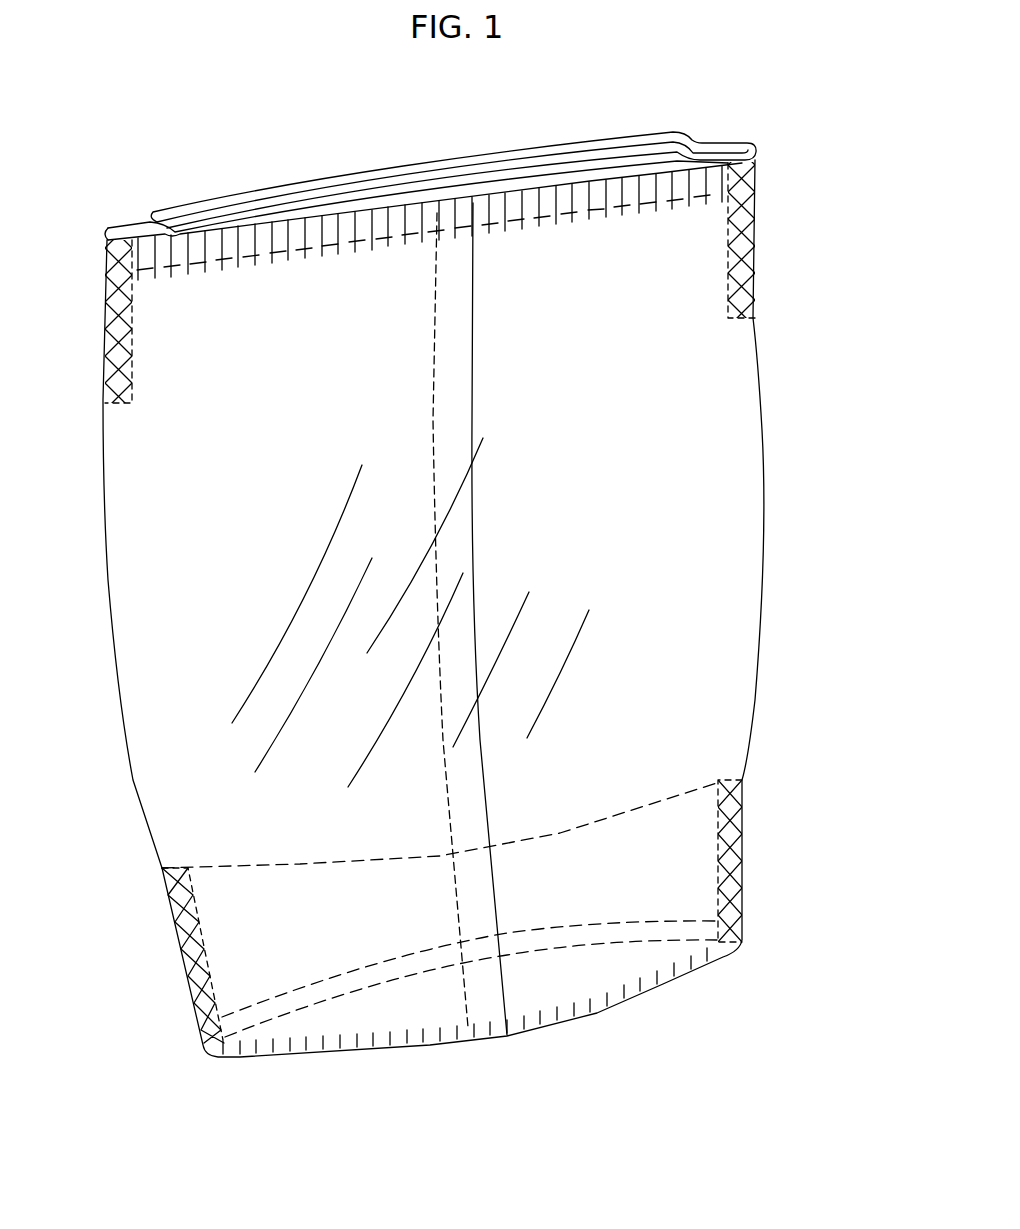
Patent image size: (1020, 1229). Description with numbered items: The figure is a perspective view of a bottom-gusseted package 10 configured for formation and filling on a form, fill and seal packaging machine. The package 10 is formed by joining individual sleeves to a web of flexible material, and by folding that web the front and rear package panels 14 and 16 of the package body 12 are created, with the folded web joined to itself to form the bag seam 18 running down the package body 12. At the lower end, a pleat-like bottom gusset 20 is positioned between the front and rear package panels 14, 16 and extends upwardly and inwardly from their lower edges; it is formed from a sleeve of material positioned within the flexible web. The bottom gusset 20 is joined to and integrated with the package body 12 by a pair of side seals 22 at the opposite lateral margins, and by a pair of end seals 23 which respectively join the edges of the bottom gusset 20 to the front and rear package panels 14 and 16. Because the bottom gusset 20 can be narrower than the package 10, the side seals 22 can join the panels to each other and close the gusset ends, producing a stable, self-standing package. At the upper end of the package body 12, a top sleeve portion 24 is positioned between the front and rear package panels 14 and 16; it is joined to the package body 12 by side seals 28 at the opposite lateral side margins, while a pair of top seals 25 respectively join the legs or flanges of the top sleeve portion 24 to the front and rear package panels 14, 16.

The bottom-gusseted package 10 is at (806, 116).
The package body 12 is at (775, 420).
The front package panel 14 is at (243, 194).
The rear package panel 16 is at (625, 528).
The bag seam 18 is at (478, 522).
The bottom gusset 20 is at (596, 820).
The side seals 22 is at (740, 856).
The end seals 23 is at (598, 1000).
The top sleeve portion 24 is at (497, 179).
The top seals 25 is at (325, 252).
The side seals 28 is at (745, 232).